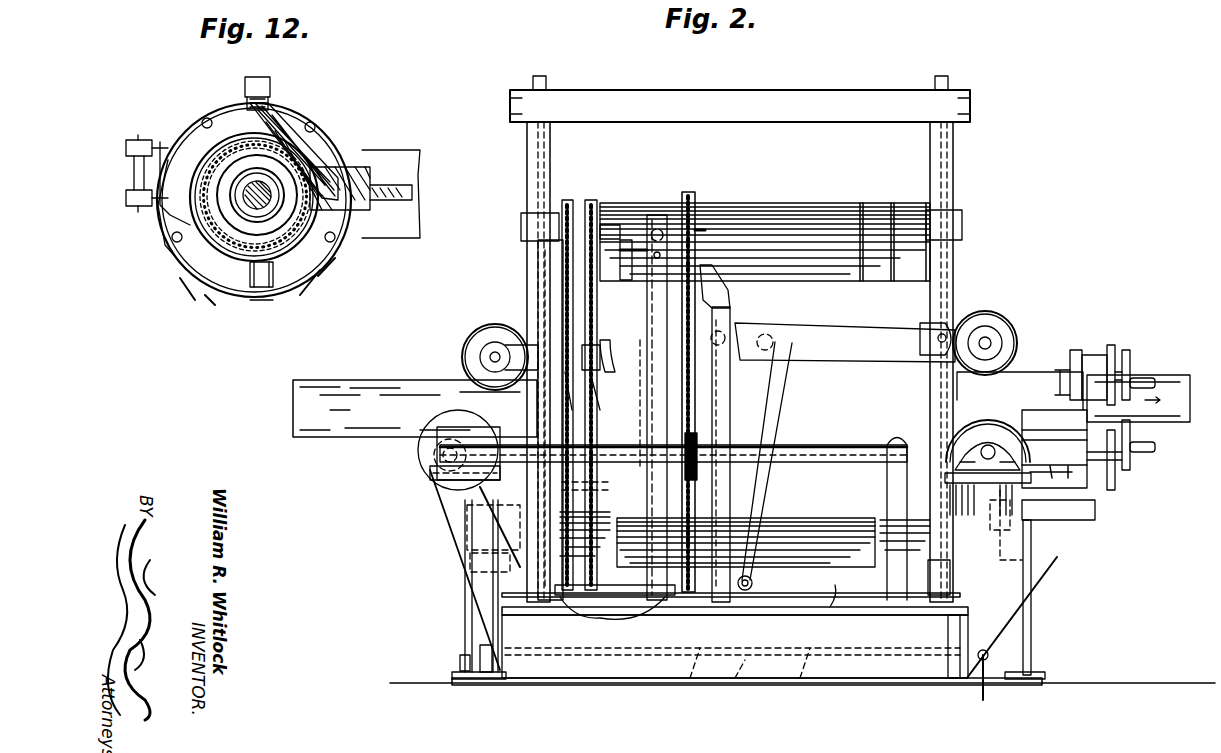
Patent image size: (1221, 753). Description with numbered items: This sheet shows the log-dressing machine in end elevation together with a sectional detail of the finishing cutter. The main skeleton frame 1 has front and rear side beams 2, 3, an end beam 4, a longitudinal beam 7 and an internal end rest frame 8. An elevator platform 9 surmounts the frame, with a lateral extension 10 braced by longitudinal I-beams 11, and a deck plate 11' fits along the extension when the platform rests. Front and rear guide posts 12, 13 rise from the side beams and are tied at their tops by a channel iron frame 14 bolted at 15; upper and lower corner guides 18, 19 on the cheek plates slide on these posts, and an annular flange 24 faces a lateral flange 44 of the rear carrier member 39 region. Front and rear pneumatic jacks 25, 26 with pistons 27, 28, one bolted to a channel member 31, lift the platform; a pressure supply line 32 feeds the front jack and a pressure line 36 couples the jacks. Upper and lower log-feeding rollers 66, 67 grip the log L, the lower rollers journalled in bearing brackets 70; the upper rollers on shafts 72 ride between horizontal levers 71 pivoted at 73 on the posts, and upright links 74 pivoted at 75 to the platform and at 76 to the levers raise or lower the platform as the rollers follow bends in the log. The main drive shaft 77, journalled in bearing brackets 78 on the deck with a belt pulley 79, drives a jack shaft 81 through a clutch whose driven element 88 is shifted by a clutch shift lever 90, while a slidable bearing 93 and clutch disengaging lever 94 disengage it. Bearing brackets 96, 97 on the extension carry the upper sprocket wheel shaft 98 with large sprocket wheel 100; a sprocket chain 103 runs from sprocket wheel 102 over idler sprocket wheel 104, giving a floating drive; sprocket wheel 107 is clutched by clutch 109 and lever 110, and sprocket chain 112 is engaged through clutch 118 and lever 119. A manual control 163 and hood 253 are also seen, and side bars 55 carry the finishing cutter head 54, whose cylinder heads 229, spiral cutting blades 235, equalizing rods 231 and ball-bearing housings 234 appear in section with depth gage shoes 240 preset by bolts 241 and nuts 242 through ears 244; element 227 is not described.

In FIG. 2, the main skeleton frame 1 is at (640, 695).
In FIG. 2, the front side beam 2 is at (945, 670).
In FIG. 2, the rear side beam 3 is at (502, 680).
In FIG. 2, the end beam 4 is at (815, 670).
In FIG. 2, the longitudinal beam 7 is at (748, 683).
In FIG. 2, the internal end rest frame 8 is at (688, 680).
In FIG. 2, the elevator platform 9 is at (805, 607).
In FIG. 2, the lateral extension 10 is at (632, 595).
In FIG. 2, the longitudinal I-beams 11 is at (612, 618).
In FIG. 2, the deck plate 11' is at (828, 611).
In FIG. 2, the front guide posts 12 is at (953, 148).
In FIG. 2, the rear guide posts 13 is at (527, 158).
In FIG. 2, the rectangular channel iron frame 14 is at (612, 90).
In FIG. 2, the bolts 15 is at (546, 80).
In FIG. 2, the upper corner guides 18 is at (521, 222).
In FIG. 2, the lower corner guides 19 is at (930, 578).
In FIG. 2, the annular flange 24 is at (912, 203).
In FIG. 2, the front pneumatic jack 25 is at (1031, 638).
In FIG. 2, the rear pneumatic jack 26 is at (462, 664).
In FIG. 2, the piston 27 is at (1012, 542).
In FIG. 2, the piston 28 is at (468, 568).
In FIG. 2, the bottom outstanding channel member 31 is at (462, 535).
In FIG. 2, the pressure supply line 32 is at (985, 695).
In FIG. 2, the pressure line 36 is at (890, 648).
In FIG. 2, the rear annular side carrier member 39 is at (598, 210).
In FIG. 2, the circumferential lateral flange 44 is at (876, 203).
In FIG. 12, the finishing cutter head 54 is at (205, 98).
In FIG. 12, the side bars 55 is at (398, 150).
In FIG. 2, the upper log-feeding rollers 66 is at (493, 324).
In FIG. 2, the lower log-feeding rollers 67 is at (420, 450).
In FIG. 2, the bearing brackets 70 is at (475, 600).
In FIG. 2, the horizontal levers 71 is at (823, 323).
In FIG. 2, the shafts 72 is at (490, 355).
In FIG. 2, the pivots 73 is at (955, 312).
In FIG. 2, the upright links 74 is at (786, 416).
In FIG. 2, the pivots 75 is at (752, 583).
In FIG. 2, the pivots 76 is at (765, 334).
In FIG. 2, the main drive shaft 77 is at (850, 445).
In FIG. 2, the bearing brackets 78 is at (500, 497).
In FIG. 2, the belt pulley 79 is at (445, 476).
In FIG. 2, the jack shaft 81 is at (982, 447).
In FIG. 2, the driven clutch element 88 is at (998, 412).
In FIG. 2, the clutch shift lever 90 is at (1150, 450).
In FIG. 2, the slidable bearing 93 is at (1010, 470).
In FIG. 2, the clutch disengaging lever 94 is at (1068, 478).
In FIG. 2, the bearing bracket 96 is at (538, 285).
In FIG. 2, the bearing bracket 97 is at (650, 408).
In FIG. 2, the upper sprocket wheel shaft 98 is at (640, 240).
In FIG. 2, the large sprocket wheel 100 is at (690, 200).
In FIG. 2, the sprocket wheel 102 is at (690, 480).
In FIG. 2, the sprocket chain 103 is at (697, 232).
In FIG. 2, the idler sprocket wheel 104 is at (720, 300).
In FIG. 2, the sprocket wheel 107 is at (575, 200).
In FIG. 2, the clutch 109 is at (612, 225).
In FIG. 2, the clutch shift lever 110 is at (624, 280).
In FIG. 2, the sprocket chain 112 is at (590, 490).
In FIG. 2, the clutch 118 is at (600, 400).
In FIG. 2, the clutch shift lever 119 is at (608, 345).
In FIG. 2, the manual control 163 is at (1093, 358).
In FIG. 2, the outfeed 227 is at (1105, 475).
In FIG. 12, the cylinder heads 229 is at (298, 283).
In FIG. 12, the equalizing rods 231 is at (398, 200).
In FIG. 12, the ball-bearing housings 234 is at (280, 138).
In FIG. 12, the spiral cutting blades 235 is at (185, 298).
In FIG. 12, the depth gage shoes 240 is at (242, 298).
In FIG. 12, the bolts 241 is at (134, 173).
In FIG. 12, the nuts 242 is at (126, 148).
In FIG. 12, the ears 244 is at (165, 208).
In FIG. 2, the hood 253 is at (782, 215).
In FIG. 2, the log L is at (338, 380).